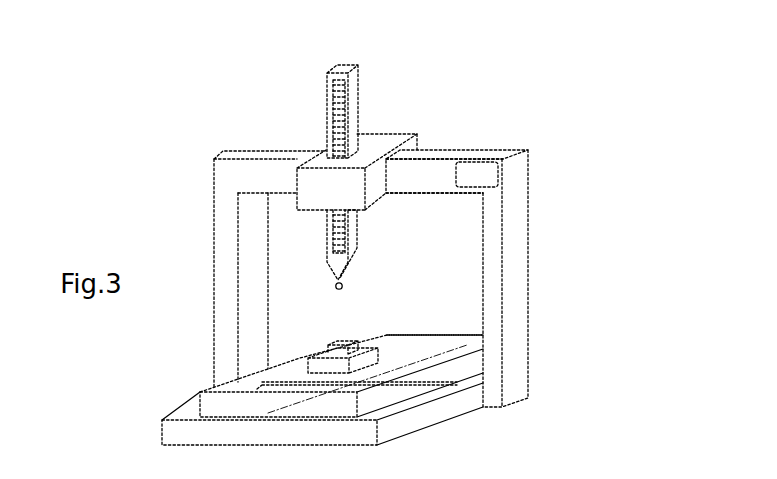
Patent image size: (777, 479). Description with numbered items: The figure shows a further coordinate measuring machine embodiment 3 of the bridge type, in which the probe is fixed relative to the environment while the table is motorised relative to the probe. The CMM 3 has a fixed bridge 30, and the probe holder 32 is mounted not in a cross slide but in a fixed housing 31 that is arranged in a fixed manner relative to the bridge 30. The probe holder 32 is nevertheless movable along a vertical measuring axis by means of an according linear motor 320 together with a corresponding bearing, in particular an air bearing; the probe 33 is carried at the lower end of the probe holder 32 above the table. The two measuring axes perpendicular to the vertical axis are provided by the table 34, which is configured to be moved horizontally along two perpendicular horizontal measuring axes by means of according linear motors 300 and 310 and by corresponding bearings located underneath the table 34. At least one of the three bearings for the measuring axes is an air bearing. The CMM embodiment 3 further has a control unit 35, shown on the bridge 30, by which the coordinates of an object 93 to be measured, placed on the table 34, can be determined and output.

The CMM embodiment 3 is at (600, 145).
The fixed bridge 30 is at (513, 258).
The fixed housing 31 is at (380, 145).
The probe holder 32 is at (347, 108).
The probe 33 is at (337, 272).
The table 34 is at (387, 335).
The control unit 35 is at (470, 175).
The object 93 is at (353, 341).
The linear motor 300 is at (428, 345).
The linear motor 310 is at (290, 372).
The linear motor 320 is at (318, 176).